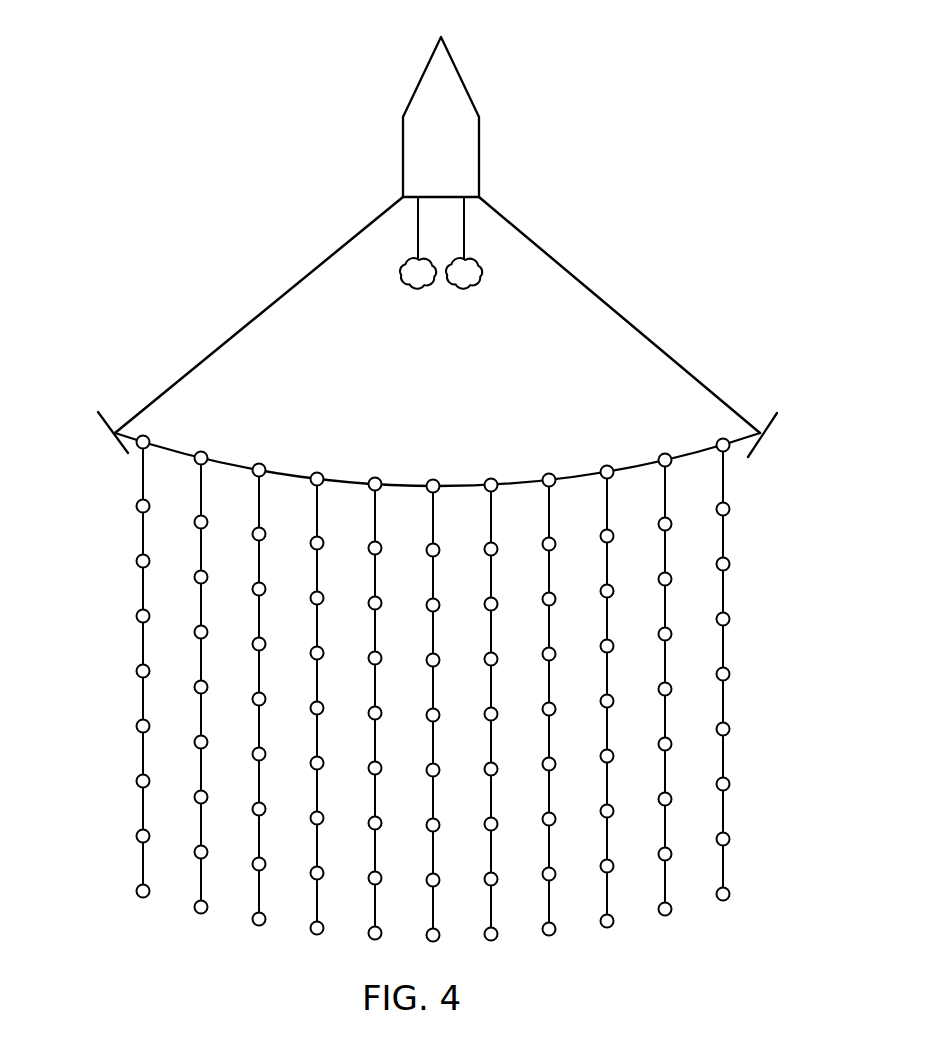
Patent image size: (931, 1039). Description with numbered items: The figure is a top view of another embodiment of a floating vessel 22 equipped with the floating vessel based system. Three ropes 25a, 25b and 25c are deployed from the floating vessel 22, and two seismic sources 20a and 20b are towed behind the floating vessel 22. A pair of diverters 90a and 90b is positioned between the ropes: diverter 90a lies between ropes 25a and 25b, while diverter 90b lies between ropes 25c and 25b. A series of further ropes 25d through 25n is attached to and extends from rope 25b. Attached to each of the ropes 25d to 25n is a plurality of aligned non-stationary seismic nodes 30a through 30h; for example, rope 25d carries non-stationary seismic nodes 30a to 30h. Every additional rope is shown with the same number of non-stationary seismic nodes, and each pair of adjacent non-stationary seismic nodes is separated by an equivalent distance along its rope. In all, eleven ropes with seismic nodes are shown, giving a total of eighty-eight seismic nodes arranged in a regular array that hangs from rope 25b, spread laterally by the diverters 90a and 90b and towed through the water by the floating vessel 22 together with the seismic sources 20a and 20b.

The floating vessel 22 is at (480, 157).
The seismic source 20a is at (400, 272).
The seismic source 20b is at (482, 268).
The rope 25a is at (255, 320).
The rope 25b is at (130, 435).
The rope 25c is at (628, 318).
The rope 25d is at (101, 667).
The rope 25n is at (730, 643).
The diverter 90a is at (125, 440).
The diverter 90b is at (780, 425).
The non-stationary seismic node 30a is at (136, 505).
The non-stationary seismic node 30h is at (136, 892).